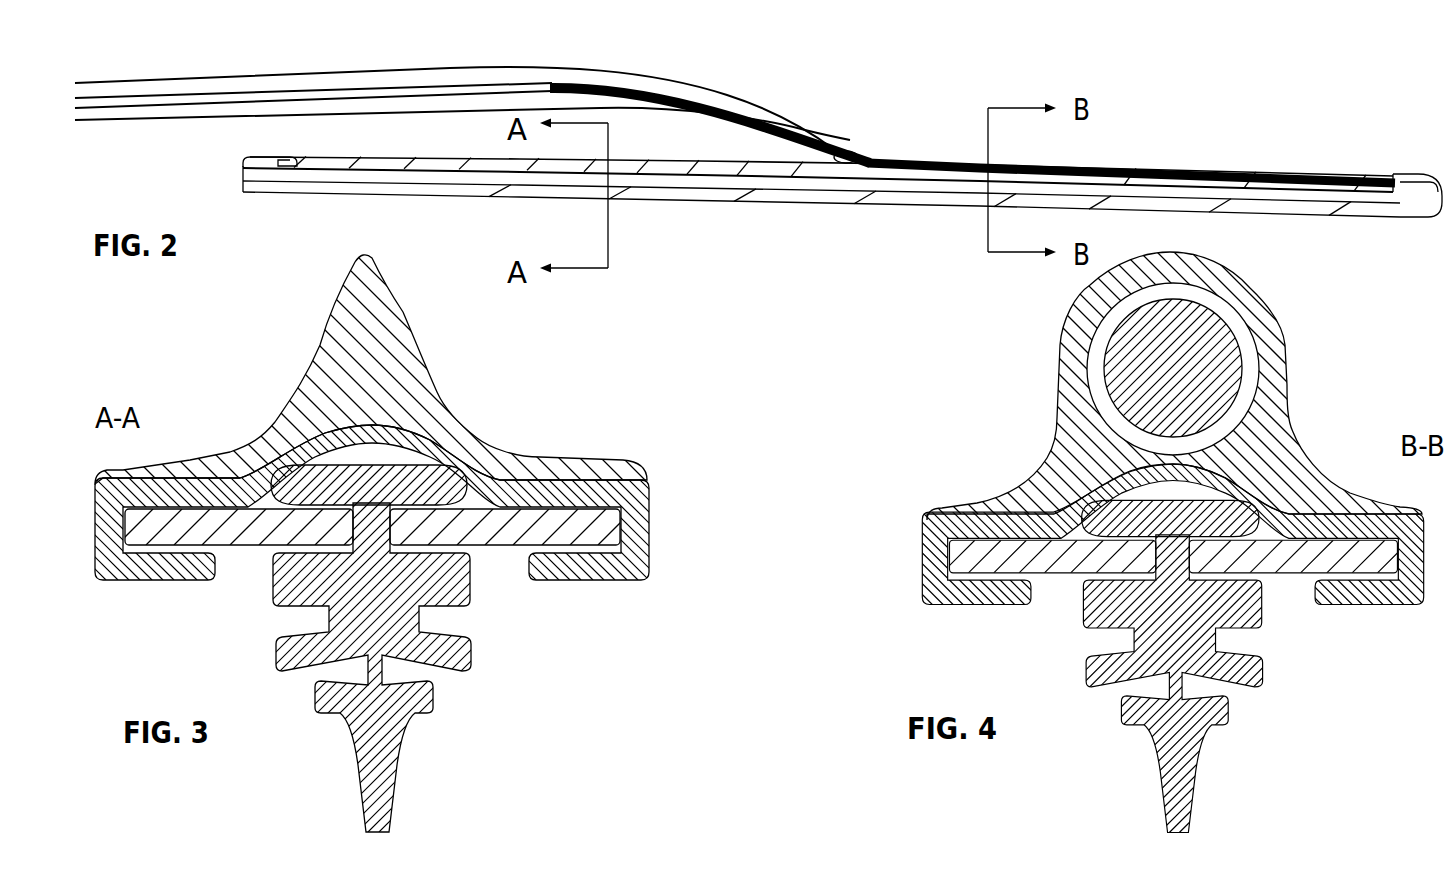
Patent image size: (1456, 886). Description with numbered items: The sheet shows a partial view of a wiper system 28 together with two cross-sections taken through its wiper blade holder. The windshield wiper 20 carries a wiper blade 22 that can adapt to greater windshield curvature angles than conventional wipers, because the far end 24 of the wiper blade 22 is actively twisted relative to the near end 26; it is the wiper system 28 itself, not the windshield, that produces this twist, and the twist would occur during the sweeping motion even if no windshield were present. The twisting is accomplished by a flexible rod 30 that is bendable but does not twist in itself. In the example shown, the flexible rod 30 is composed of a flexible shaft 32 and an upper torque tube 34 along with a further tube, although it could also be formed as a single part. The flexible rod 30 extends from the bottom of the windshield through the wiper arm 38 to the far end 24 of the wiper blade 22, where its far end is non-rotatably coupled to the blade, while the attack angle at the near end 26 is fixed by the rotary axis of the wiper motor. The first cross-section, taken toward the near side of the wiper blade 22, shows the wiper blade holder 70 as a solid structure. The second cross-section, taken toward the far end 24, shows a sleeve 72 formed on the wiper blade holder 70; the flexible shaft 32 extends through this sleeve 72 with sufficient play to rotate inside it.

In FIG. 2, the windshield wiper 20 is at (849, 264).
In FIG. 2, the wiper blade 22 is at (750, 197).
In FIG. 3, the wiper blade 22 is at (418, 690).
In FIG. 4, the wiper blade 22 is at (1187, 710).
In FIG. 2, the far end 24 is at (1434, 210).
In FIG. 2, the near end 26 is at (247, 193).
In FIG. 2, the wiper system 28 is at (1137, 98).
In FIG. 2, the flexible rod 30 is at (244, 100).
In FIG. 2, the flexible shaft 32 is at (760, 124).
In FIG. 4, the flexible shaft 32 is at (1130, 328).
In FIG. 2, the upper torque tube 34 is at (313, 95).
In FIG. 2, the wiper arm 38 is at (720, 87).
In FIG. 3, the wiper blade holder 70 is at (423, 395).
In FIG. 4, the wiper blade holder 70 is at (1068, 440).
In FIG. 4, the sleeve 72 is at (1073, 370).